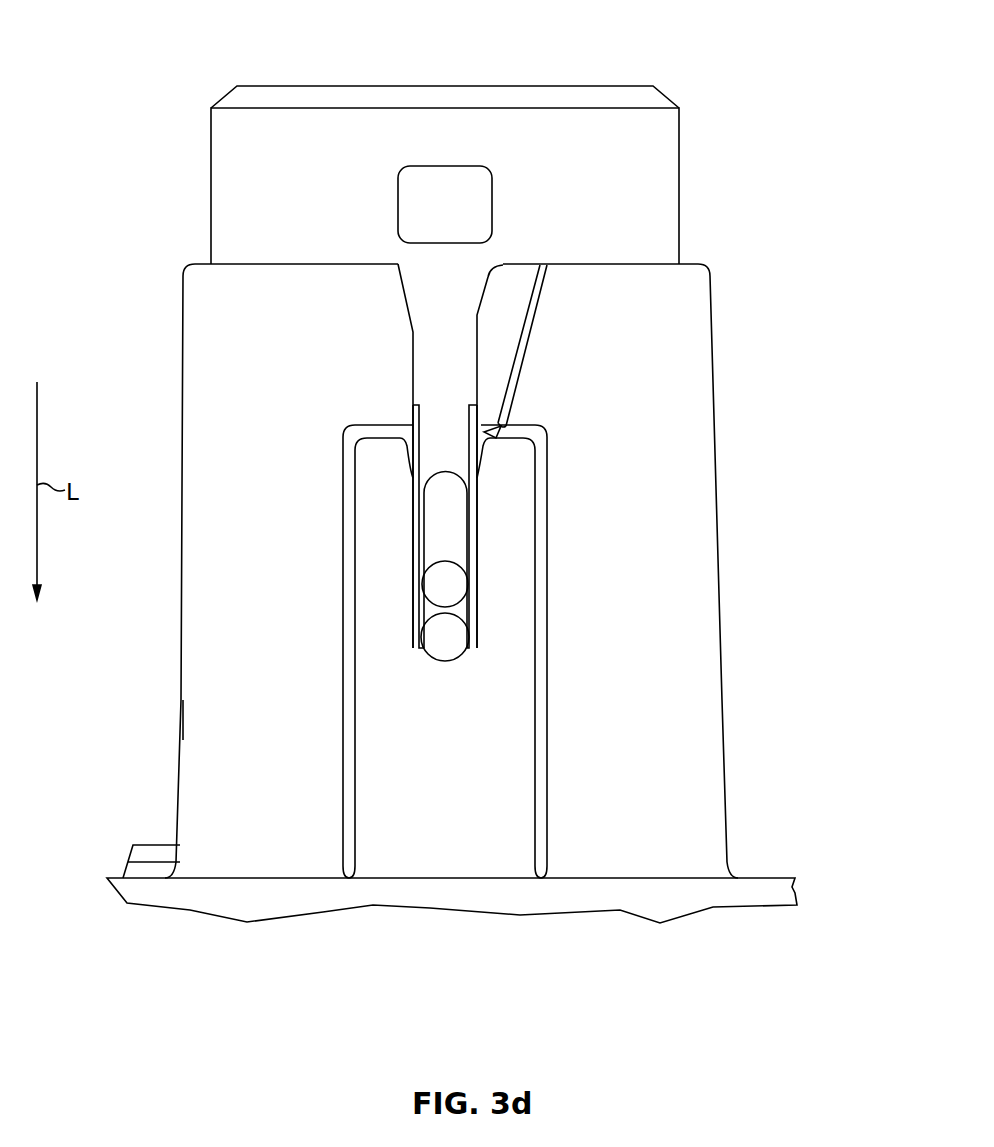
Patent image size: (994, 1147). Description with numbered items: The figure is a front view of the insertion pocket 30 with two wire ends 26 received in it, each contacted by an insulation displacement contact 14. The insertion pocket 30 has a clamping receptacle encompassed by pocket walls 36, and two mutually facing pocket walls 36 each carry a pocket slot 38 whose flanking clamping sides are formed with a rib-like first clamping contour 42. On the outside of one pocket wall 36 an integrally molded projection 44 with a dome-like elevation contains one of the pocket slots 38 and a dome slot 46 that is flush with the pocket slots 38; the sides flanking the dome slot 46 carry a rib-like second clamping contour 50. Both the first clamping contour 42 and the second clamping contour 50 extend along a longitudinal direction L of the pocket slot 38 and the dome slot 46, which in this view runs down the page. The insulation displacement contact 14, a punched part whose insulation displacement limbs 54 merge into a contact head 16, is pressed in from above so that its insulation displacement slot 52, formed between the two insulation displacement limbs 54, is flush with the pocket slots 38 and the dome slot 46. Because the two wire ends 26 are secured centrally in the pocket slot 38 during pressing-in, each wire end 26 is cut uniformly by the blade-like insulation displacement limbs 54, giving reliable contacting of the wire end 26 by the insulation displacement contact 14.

The insulation displacement contact 14 is at (617, 86).
The contact head 16 is at (634, 180).
The wire ends 26 is at (438, 650).
The insertion pocket 30 is at (720, 601).
The pocket walls 36 is at (270, 780).
The pocket slot 38 is at (259, 414).
The first clamping contour 42 is at (418, 497).
The projection 44 is at (478, 815).
The dome slot 46 is at (259, 414).
The second clamping contour 50 is at (420, 552).
The insulation displacement slot 52 is at (452, 488).
The insulation displacement limbs 54 is at (425, 608).